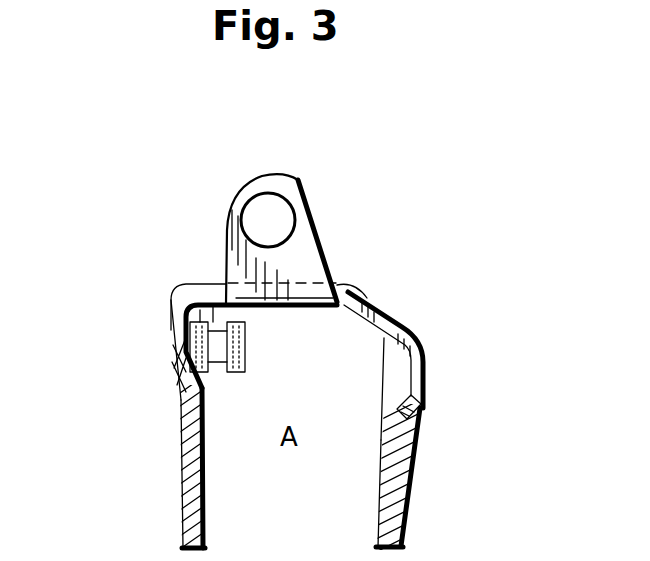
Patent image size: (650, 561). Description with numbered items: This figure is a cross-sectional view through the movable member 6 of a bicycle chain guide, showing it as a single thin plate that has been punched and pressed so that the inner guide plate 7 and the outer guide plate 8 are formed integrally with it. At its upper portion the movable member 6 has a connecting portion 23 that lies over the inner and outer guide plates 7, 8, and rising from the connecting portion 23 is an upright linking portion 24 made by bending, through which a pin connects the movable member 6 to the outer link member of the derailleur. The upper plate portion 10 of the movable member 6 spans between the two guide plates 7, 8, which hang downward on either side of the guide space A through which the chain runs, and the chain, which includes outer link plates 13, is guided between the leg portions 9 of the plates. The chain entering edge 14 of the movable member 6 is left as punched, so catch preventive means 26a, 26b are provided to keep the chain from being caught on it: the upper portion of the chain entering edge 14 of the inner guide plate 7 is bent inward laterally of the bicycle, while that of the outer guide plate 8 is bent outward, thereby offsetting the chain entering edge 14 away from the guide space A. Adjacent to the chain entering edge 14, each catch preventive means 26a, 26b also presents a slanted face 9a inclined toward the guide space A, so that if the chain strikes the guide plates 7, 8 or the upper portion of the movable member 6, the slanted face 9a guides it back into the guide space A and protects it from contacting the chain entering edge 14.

The movable member 6 is at (364, 283).
The inner guide plate 7 is at (183, 518).
The outer guide plate 8 is at (405, 528).
The legs 9 is at (203, 447).
The slanted face 9a is at (212, 352).
The top plate 10 is at (302, 306).
The outer link plate 13 is at (172, 284).
The chain entering edge 14 is at (178, 318).
The connecting portion 23 is at (218, 302).
The upright linking portion 24 is at (300, 177).
The catch preventive means 26a is at (168, 380).
The catch preventive means 26b is at (428, 408).